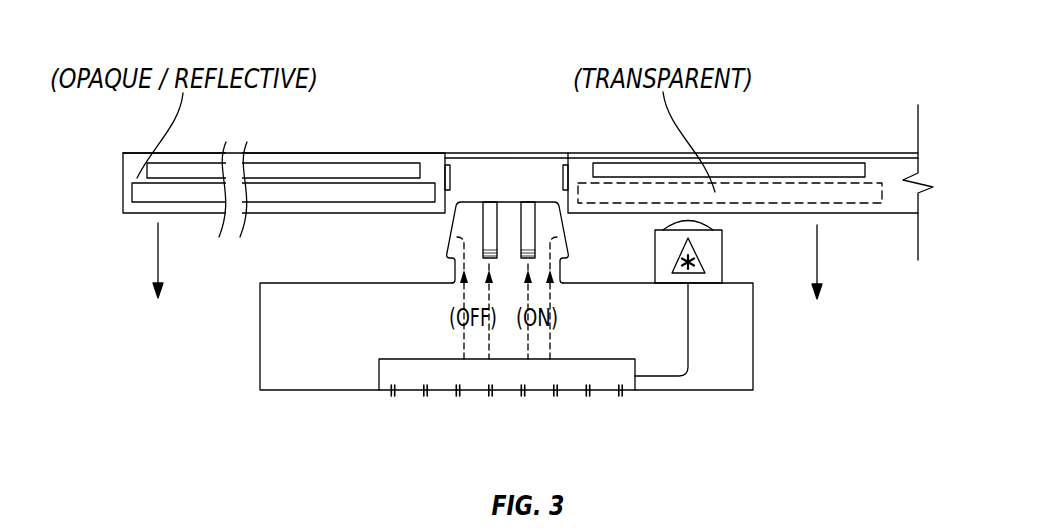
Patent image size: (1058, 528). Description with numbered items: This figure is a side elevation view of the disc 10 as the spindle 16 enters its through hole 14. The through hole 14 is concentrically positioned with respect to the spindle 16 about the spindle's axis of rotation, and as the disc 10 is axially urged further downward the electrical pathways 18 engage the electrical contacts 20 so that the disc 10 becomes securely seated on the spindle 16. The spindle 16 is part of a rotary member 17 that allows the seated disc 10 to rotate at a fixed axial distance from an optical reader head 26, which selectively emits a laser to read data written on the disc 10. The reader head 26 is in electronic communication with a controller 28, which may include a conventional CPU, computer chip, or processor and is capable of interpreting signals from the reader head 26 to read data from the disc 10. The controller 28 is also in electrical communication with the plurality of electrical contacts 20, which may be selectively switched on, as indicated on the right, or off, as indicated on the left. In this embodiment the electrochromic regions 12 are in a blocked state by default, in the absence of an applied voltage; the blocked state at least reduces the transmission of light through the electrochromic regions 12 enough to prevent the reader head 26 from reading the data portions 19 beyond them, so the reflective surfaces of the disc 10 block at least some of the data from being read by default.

The disc 10 is at (754, 111).
The electrochromic regions 12 is at (270, 182).
The through hole 14 is at (548, 143).
The spindle 16 is at (582, 234).
The rotary member 17 is at (357, 283).
The electrical pathways 18 is at (450, 182).
The data portions 19 is at (347, 162).
The electrical contacts 20 is at (490, 207).
The optical reader head 26 is at (697, 276).
The controller 28 is at (480, 373).